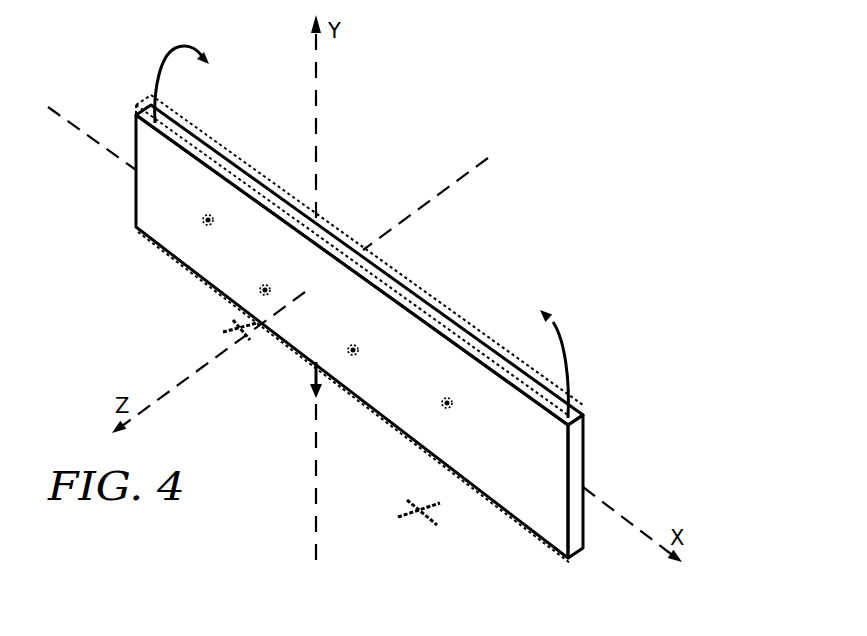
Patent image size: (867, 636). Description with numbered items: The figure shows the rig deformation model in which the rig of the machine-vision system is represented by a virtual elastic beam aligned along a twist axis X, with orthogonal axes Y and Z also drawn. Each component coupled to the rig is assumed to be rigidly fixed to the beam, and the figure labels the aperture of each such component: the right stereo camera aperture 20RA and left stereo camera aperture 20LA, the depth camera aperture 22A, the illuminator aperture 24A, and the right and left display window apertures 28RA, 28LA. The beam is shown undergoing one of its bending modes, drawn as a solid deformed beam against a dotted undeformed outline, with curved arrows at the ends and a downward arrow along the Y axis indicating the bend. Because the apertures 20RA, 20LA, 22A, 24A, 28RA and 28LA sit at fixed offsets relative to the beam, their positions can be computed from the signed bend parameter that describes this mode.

The right stereo camera aperture 20RA is at (192, 208).
The depth camera aperture 22A is at (276, 277).
The illuminator aperture 24A is at (371, 358).
The left stereo camera aperture 20LA is at (469, 415).
The right display window aperture 28RA is at (217, 332).
The left display window aperture 28LA is at (399, 506).